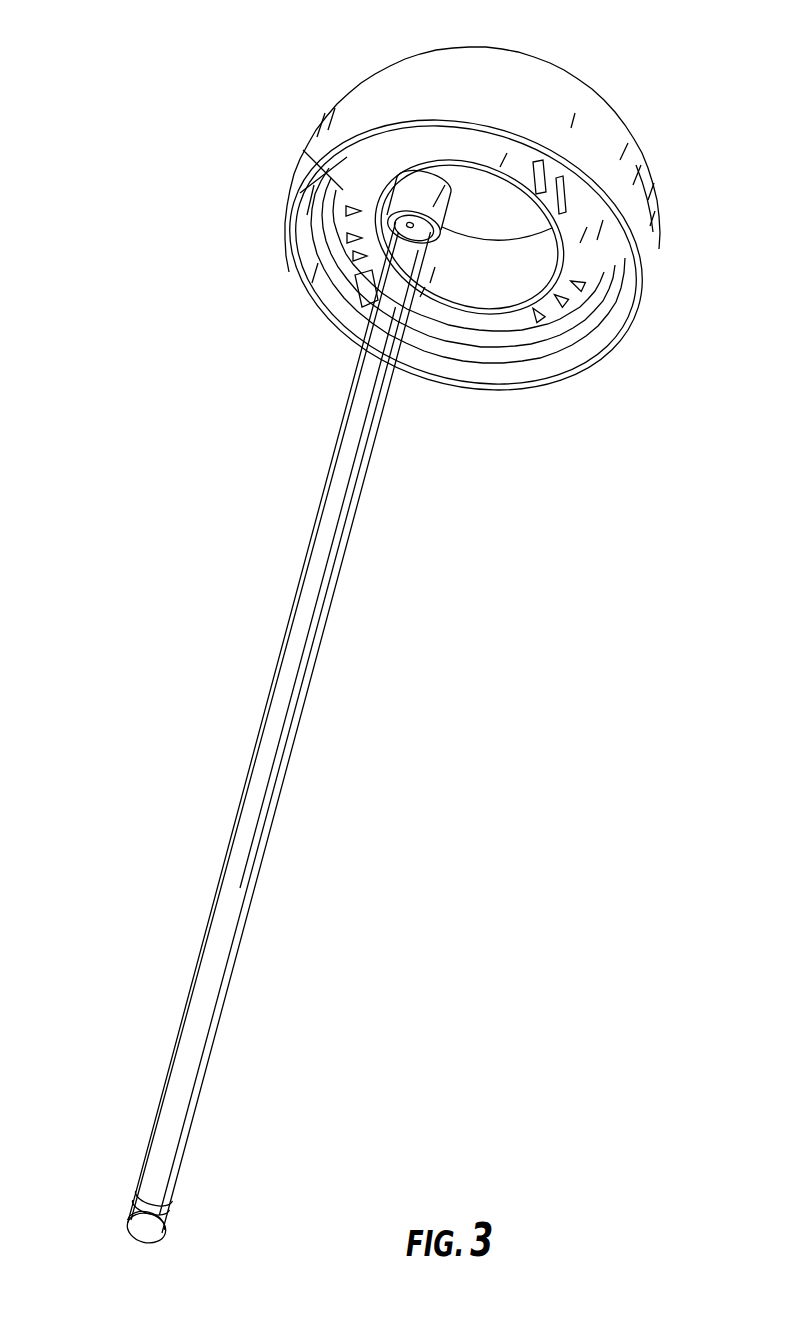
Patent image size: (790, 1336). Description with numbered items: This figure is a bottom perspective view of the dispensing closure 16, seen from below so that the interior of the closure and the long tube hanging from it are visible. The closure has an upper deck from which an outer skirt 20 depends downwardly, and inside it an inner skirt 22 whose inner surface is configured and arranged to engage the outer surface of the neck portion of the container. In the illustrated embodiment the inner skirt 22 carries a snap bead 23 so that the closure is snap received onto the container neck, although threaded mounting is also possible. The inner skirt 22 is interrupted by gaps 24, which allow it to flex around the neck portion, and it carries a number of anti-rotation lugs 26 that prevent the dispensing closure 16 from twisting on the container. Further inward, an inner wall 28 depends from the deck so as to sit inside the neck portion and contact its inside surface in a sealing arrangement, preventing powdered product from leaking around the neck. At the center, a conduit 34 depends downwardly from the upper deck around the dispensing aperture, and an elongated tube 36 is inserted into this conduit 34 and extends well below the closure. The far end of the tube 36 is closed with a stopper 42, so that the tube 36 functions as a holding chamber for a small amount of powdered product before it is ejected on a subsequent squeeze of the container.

The dispensing closure 16 is at (122, 540).
The outer skirt 20 is at (323, 137).
The inner skirt 22 is at (350, 173).
The snap bead 23 is at (433, 322).
The gaps 24 is at (553, 190).
The anti-rotation lugs 26 is at (354, 257).
The inner wall 28 is at (482, 300).
The conduit 34 is at (417, 187).
The elongated tube 36 is at (245, 852).
The stopper 42 is at (148, 1238).